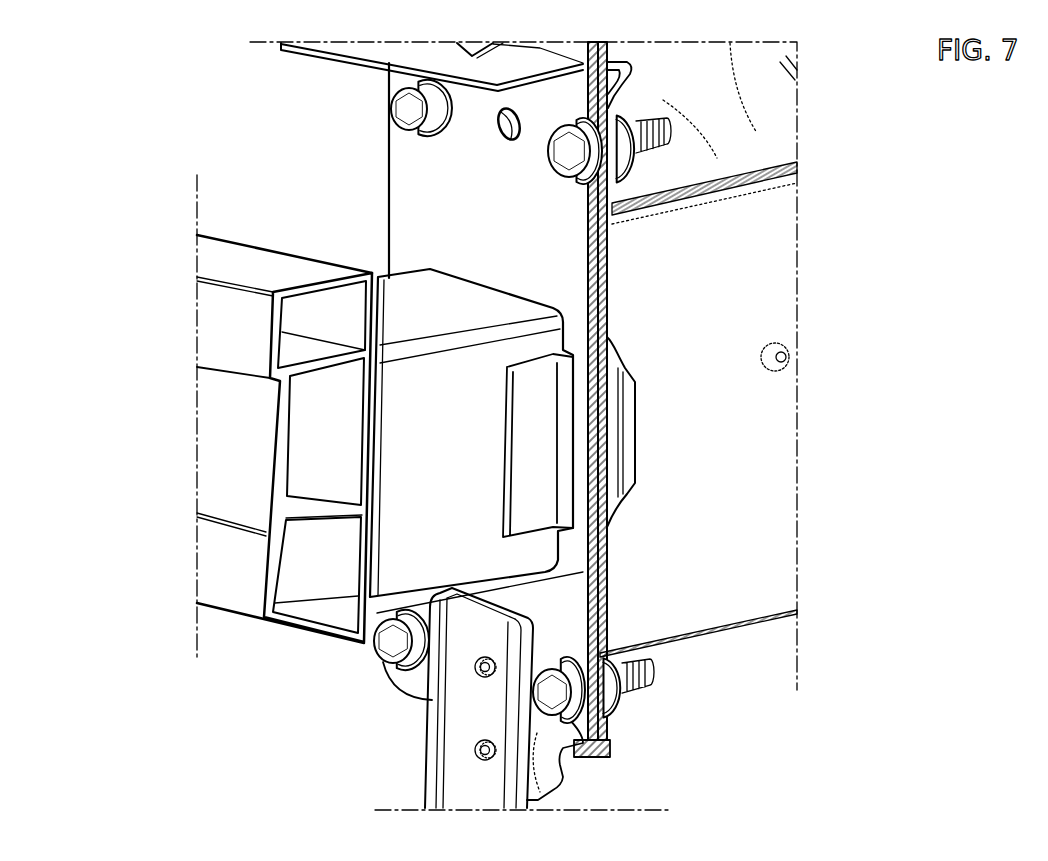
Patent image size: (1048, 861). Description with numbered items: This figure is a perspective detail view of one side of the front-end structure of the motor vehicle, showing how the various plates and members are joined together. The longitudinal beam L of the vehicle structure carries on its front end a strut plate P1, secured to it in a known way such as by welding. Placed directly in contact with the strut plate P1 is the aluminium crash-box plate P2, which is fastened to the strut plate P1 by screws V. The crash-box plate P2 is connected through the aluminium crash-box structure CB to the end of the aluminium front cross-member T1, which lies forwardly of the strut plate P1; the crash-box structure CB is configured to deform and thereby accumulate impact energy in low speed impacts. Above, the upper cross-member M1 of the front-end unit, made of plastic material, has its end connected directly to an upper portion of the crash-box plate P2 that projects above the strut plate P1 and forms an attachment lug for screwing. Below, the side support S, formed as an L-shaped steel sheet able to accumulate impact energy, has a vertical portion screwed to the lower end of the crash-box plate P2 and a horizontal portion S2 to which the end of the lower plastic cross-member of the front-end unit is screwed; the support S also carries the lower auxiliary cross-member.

The upper cross-member M1 is at (347, 72).
The screws V is at (405, 112).
The crash-box plate P2 is at (418, 205).
The crash-box structure CB is at (475, 310).
The strut plate P1 is at (617, 288).
The front cross-member T1 is at (238, 626).
The side support S is at (440, 698).
The horizontal portion S2 is at (457, 781).
The longitudinal beam L is at (763, 630).